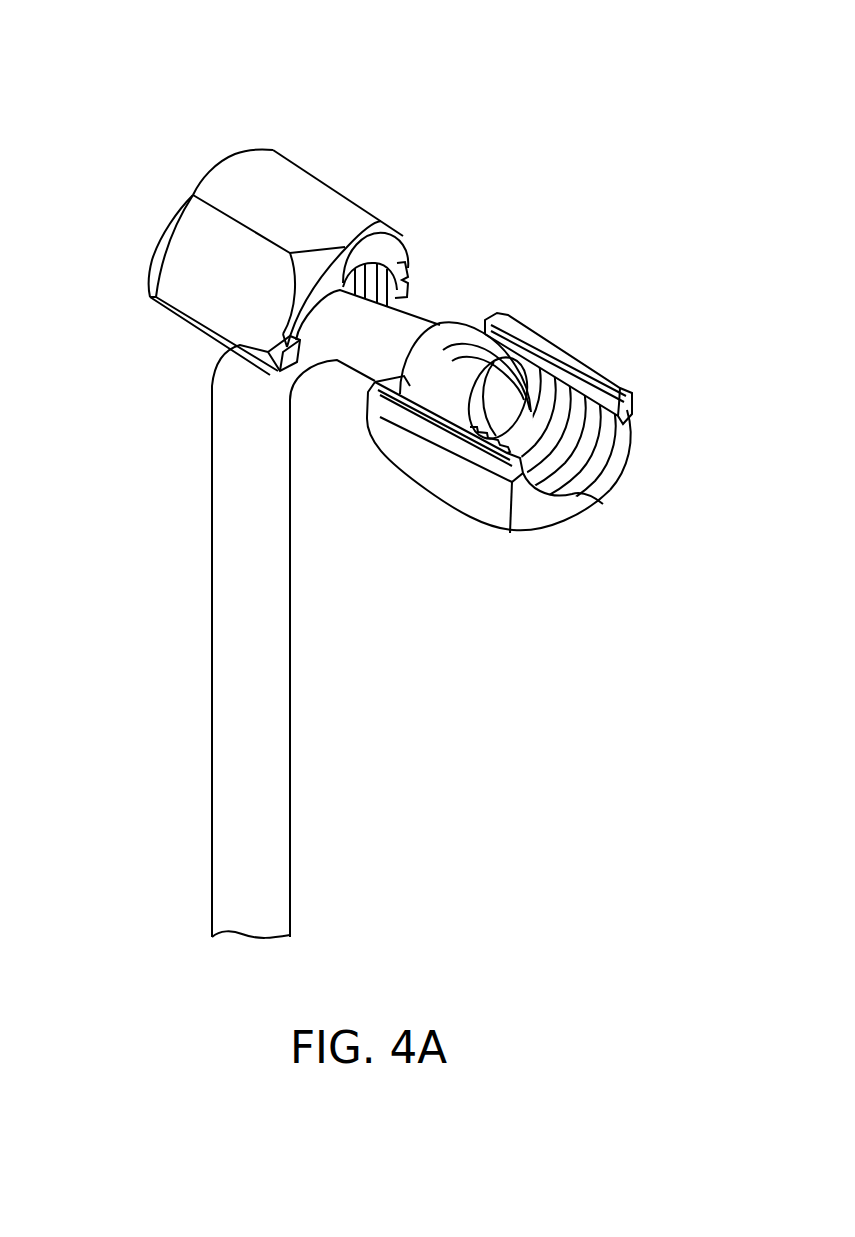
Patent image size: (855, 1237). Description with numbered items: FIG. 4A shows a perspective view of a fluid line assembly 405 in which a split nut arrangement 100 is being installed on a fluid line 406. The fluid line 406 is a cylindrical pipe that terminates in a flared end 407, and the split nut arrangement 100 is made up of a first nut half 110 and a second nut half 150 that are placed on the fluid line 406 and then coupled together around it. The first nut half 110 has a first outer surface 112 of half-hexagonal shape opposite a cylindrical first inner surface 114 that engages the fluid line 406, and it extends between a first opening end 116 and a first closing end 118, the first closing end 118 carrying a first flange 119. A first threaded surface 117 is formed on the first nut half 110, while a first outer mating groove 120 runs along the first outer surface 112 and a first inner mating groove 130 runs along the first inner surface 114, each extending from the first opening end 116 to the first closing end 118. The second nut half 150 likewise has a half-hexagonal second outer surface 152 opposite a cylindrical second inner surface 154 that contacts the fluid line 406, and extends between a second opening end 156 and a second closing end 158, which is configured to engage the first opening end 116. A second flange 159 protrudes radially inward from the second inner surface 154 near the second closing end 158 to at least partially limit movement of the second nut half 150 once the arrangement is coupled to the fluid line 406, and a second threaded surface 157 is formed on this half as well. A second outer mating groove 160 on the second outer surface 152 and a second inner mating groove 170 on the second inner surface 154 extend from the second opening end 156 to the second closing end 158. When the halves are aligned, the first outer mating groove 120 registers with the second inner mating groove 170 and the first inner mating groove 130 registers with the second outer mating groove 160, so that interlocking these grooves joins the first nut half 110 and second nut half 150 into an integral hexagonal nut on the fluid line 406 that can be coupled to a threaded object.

The split nut arrangement 100 is at (562, 210).
The first nut half 110 is at (245, 130).
The first outer surface 112 is at (300, 187).
The first inner surface 114 is at (350, 280).
The first opening end 116 is at (335, 262).
The first threaded surface 117 is at (368, 270).
The first closing end 118 is at (175, 202).
The first flange 119 is at (185, 192).
The first outer mating groove 120 is at (417, 278).
The first inner mating groove 130 is at (230, 347).
The second nut half 150 is at (642, 355).
The second outer surface 152 is at (487, 503).
The second inner surface 154 is at (533, 408).
The second opening end 156 is at (593, 490).
The second threaded surface 157 is at (558, 487).
The second closing end 158 is at (393, 376).
The second flange 159 is at (395, 380).
The second outer mating groove 160 is at (448, 457).
The second inner mating groove 170 is at (625, 416).
The fluid line assembly 405 is at (70, 70).
The fluid line 406 is at (266, 713).
The flared end 407 is at (482, 336).